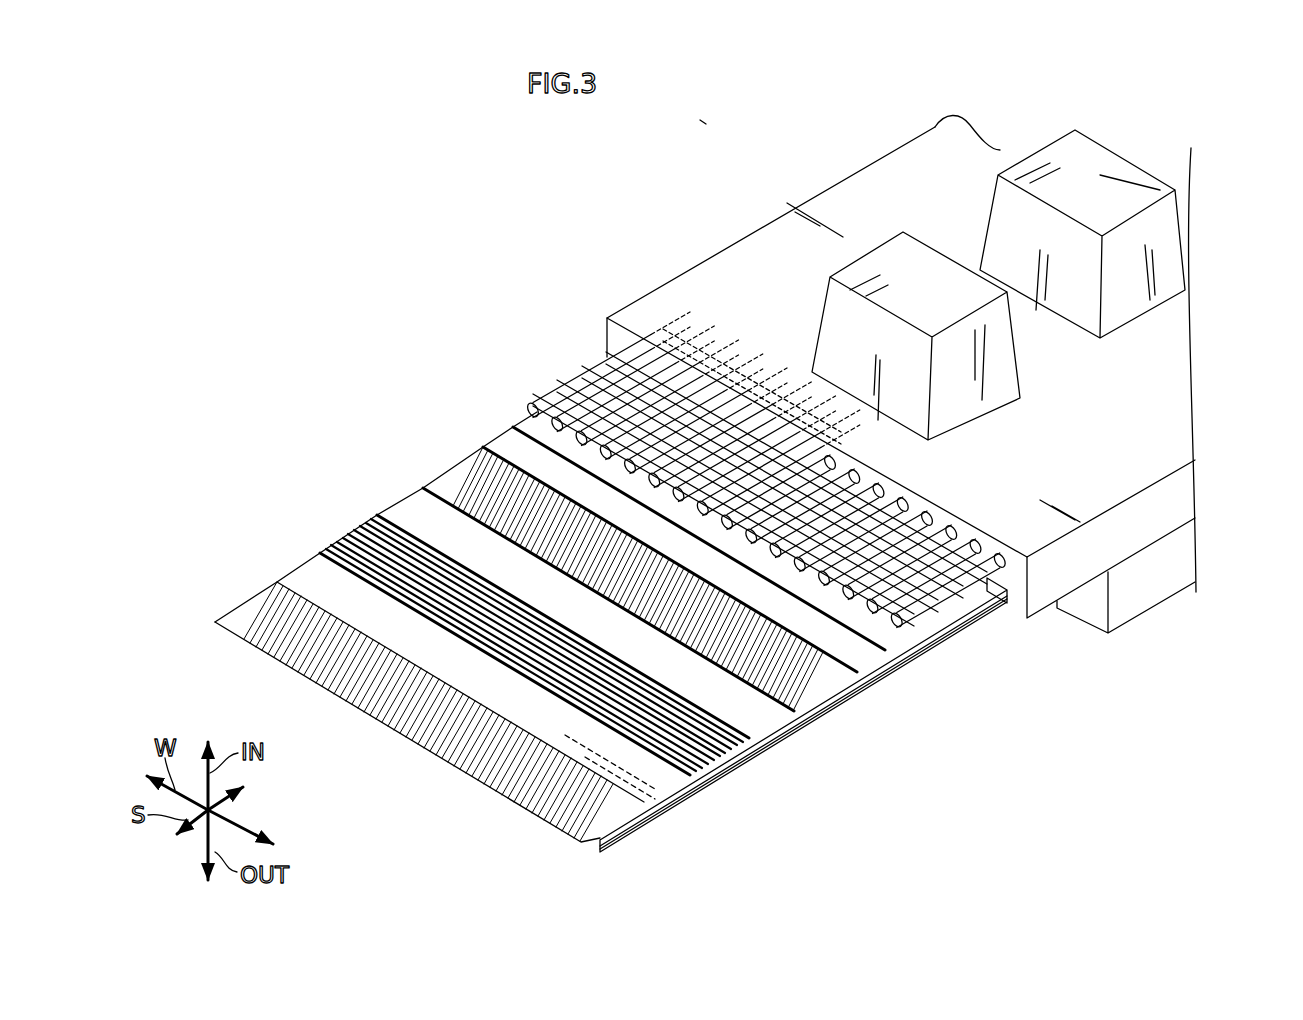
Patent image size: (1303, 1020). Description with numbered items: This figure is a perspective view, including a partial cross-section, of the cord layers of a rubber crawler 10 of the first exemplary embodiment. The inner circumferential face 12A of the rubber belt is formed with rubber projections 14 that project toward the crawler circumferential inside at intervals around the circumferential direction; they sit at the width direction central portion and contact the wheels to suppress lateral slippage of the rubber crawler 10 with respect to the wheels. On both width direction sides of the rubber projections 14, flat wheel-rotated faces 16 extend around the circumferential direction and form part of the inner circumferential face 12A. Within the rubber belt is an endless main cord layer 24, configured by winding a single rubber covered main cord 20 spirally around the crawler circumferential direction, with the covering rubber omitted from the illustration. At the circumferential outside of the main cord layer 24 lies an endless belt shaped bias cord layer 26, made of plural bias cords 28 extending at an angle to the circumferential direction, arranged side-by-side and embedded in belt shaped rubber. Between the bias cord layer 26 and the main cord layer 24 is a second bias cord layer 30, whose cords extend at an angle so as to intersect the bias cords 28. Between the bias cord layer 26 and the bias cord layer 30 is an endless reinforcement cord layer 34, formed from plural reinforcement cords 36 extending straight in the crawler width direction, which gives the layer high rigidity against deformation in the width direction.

The rubber crawler 10 is at (483, 189).
The inner circumferential face 12A is at (696, 295).
The rubber projections 14 is at (880, 245).
The wheel-rotated faces 16 is at (913, 187).
The main cord 20 is at (555, 384).
The main cord layer 24 is at (518, 404).
The bias cord layer 26 is at (681, 797).
The bias cords 28 is at (870, 663).
The bias cord layer 30 is at (813, 710).
The reinforcement cord layer 34 is at (772, 735).
The reinforcement cords 36 is at (773, 742).